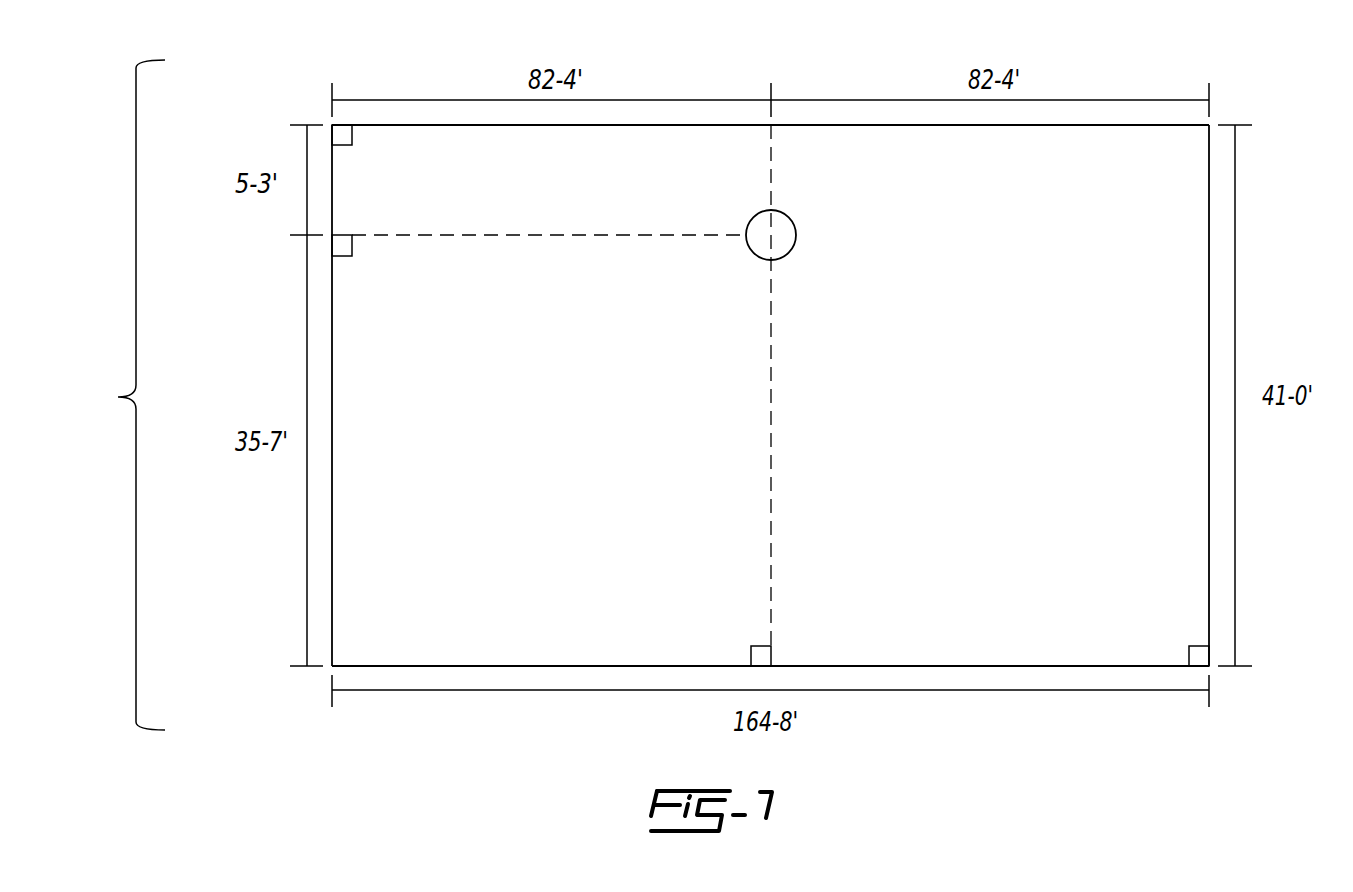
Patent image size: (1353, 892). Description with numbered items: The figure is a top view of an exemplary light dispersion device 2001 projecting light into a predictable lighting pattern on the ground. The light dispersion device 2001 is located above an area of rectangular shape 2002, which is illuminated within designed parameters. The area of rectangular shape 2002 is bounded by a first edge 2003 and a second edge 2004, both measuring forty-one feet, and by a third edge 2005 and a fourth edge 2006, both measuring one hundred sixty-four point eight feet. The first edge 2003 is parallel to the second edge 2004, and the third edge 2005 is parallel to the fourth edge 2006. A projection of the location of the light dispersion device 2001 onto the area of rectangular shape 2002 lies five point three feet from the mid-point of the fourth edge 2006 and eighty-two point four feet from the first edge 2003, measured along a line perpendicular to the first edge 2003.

The light dispersion device 2001 is at (796, 224).
The area of rectangular shape 2002 is at (113, 395).
The first edge 2003 is at (332, 593).
The second edge 2004 is at (1209, 252).
The third edge 2005 is at (611, 666).
The fourth edge 2006 is at (633, 125).